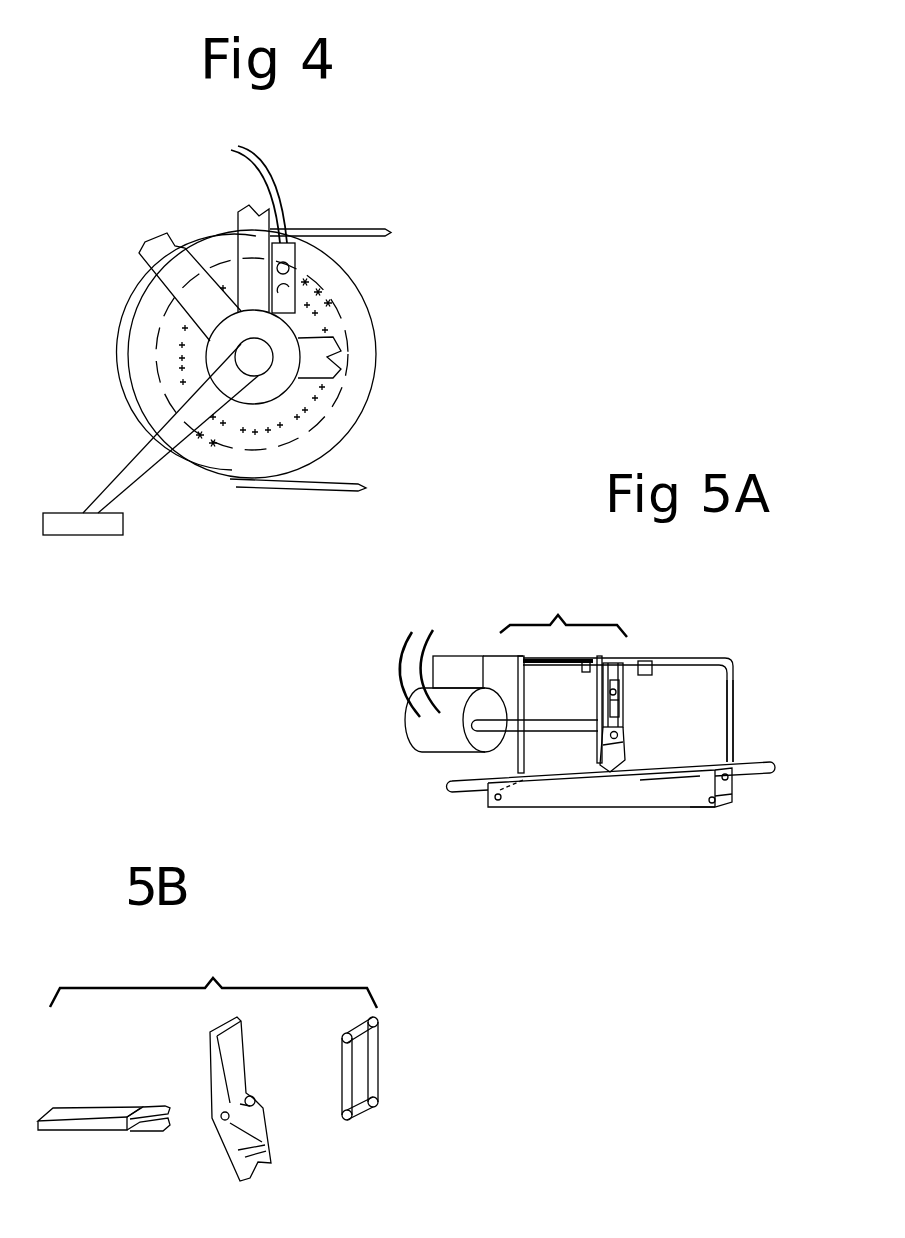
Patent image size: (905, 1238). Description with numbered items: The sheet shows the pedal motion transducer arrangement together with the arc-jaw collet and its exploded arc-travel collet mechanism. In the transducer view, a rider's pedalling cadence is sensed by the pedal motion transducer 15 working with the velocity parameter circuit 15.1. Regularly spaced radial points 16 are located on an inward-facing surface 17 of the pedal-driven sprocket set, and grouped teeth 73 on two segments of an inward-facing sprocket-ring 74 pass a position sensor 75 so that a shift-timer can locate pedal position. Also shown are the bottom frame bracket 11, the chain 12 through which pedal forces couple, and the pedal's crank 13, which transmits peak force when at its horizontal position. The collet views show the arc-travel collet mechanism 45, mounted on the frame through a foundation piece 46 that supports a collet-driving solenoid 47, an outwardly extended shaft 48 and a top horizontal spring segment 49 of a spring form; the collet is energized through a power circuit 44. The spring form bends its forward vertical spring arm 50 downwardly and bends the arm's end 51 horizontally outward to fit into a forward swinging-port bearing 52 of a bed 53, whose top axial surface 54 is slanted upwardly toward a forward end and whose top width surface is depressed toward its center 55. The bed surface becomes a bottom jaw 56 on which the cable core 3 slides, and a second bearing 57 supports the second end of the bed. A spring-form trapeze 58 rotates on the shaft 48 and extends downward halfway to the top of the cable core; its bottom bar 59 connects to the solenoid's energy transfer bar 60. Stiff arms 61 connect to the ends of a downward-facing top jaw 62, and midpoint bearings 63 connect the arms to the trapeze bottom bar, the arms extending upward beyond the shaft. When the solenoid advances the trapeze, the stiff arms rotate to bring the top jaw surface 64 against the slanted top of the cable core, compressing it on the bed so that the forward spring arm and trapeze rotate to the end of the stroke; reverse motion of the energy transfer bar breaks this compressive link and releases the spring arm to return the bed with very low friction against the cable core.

In FIG. 5A, the cable core 3 is at (755, 753).
In FIG. 4, the bottom frame bracket 11 is at (297, 383).
In FIG. 4, the chain 12 is at (337, 227).
In FIG. 4, the pedal's crank 13 is at (127, 525).
In FIG. 4, the pedal motion transducer 15 is at (270, 287).
In FIG. 4, the velocity parameter circuit 15.1 is at (337, 165).
In FIG. 4, the regularly spaced radial points 16 is at (177, 343).
In FIG. 4, the inward-facing surface 17 is at (153, 385).
In FIG. 5A, the power circuit 44 is at (398, 657).
In FIG. 5A, the arc-travel collet mechanism 45 is at (563, 608).
In FIG. 5B, the arc-travel collet mechanism 45 is at (213, 980).
In FIG. 5A, the foundation piece 46 is at (467, 652).
In FIG. 5A, the collet-driving solenoid 47 is at (428, 743).
In FIG. 5A, the outwardly extended shaft 48 is at (697, 647).
In FIG. 5A, the top horizontal spring segment 49 is at (720, 652).
In FIG. 5A, the forward vertical spring arm 50 is at (737, 703).
In FIG. 5A, the arm's end 51 is at (722, 806).
In FIG. 5A, the forward swinging-port bearing 52 is at (728, 810).
In FIG. 5A, the bed 53 is at (702, 807).
In FIG. 5A, the top axial surface 54 is at (673, 778).
In FIG. 5A, the center depression of top width surface 55 is at (733, 782).
In FIG. 5A, the bottom jaw 56 is at (483, 795).
In FIG. 5A, the second bearing 57 is at (500, 807).
In FIG. 5A, the spring-form trapeze 58 is at (620, 776).
In FIG. 5B, the spring-form trapeze 58 is at (442, 1057).
In FIG. 5A, the bottom bar 59 is at (614, 781).
In FIG. 5B, the bottom bar 59 is at (430, 1133).
In FIG. 5A, the energy transfer bar 60 is at (538, 723).
In FIG. 5B, the energy transfer bar 60 is at (108, 1107).
In FIG. 5A, the stiff arms 61 is at (595, 740).
In FIG. 5B, the stiff arms 61 is at (227, 1143).
In FIG. 5A, the top jaw 62 is at (602, 777).
In FIG. 5B, the top jaw 62 is at (237, 1183).
In FIG. 5A, the midpoint bearings 63 is at (625, 693).
In FIG. 5B, the midpoint bearings 63 is at (247, 1112).
In FIG. 5A, the top jaw surface 64 is at (608, 776).
In FIG. 5B, the top jaw surface 64 is at (263, 1167).
In FIG. 4, the grouped teeth 73 is at (340, 303).
In FIG. 4, the inward-facing sprocket-ring 74 is at (305, 437).
In FIG. 4, the position sensor 75 is at (297, 269).